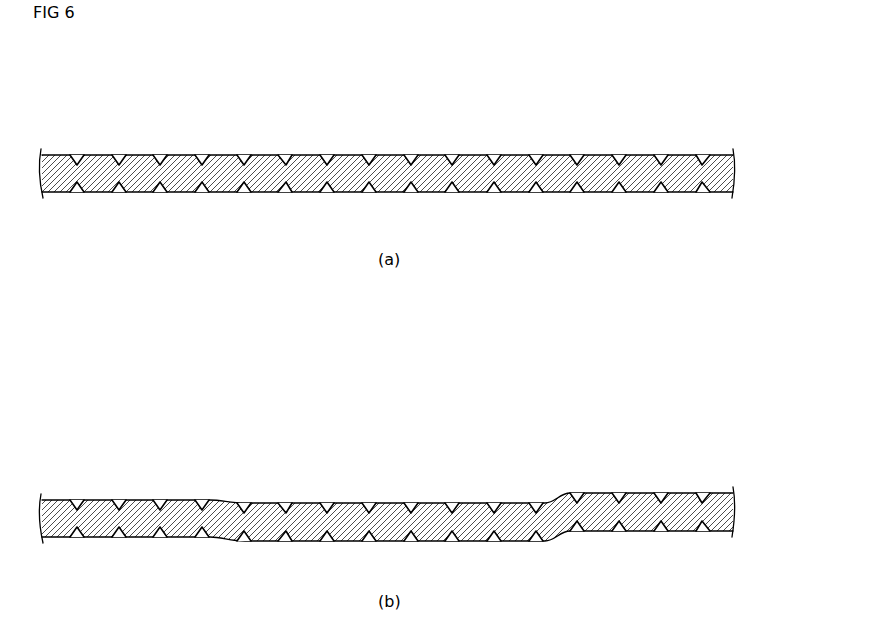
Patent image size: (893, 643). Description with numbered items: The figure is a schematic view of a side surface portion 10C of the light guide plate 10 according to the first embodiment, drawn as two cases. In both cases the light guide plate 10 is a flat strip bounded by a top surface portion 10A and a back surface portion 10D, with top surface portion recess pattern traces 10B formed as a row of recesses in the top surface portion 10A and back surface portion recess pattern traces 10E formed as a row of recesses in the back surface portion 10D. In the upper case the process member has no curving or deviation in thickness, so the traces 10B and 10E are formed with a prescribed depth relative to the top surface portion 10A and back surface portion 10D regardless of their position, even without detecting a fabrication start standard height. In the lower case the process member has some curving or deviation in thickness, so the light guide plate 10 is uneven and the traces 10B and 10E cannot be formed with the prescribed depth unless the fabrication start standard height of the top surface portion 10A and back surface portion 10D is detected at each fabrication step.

The light guide plate 10 is at (619, 112).
The top surface portion 10A is at (303, 155).
The top surface portion recess pattern traces 10B is at (365, 155).
The side surface portion 10C is at (723, 170).
The back surface portion 10D is at (640, 192).
The back surface portion recess pattern traces 10E is at (703, 192).